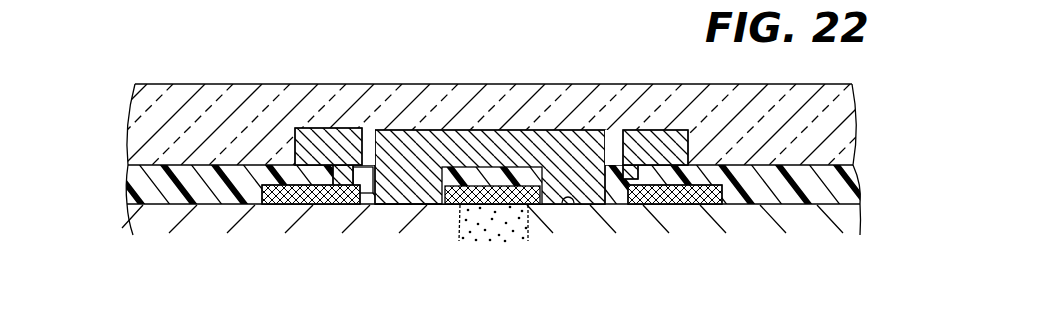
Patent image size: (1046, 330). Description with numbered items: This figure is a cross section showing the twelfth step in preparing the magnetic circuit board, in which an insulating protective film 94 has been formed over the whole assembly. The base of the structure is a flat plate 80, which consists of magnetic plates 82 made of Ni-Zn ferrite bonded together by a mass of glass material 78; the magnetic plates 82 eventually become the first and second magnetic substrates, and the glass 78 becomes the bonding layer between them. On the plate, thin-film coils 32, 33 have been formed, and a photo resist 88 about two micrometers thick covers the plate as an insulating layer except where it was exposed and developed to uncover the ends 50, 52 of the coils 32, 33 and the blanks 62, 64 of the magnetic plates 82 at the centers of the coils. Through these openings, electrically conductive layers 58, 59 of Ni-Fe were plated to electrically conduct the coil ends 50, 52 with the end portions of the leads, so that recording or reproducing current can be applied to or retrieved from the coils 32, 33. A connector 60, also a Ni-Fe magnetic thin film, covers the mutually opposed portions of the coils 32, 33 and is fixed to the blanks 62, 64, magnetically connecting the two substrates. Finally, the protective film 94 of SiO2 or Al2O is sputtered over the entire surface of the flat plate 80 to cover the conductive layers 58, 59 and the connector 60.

The flat plate 80 is at (100, 204).
The magnetic plates 82 is at (182, 210).
The coil 32 is at (257, 163).
The coil 33 is at (703, 163).
The electrically conductive layer 58 is at (333, 148).
The electrically conductive layer 59 is at (660, 135).
The insulating protective film 94 is at (434, 118).
The connector 60 is at (500, 145).
The blank 62 is at (398, 200).
The blank 64 is at (572, 208).
The end of coil 50 is at (345, 206).
The end of coil 52 is at (638, 206).
The mass of glass material 78 is at (480, 228).
The photo resist 88 is at (773, 178).